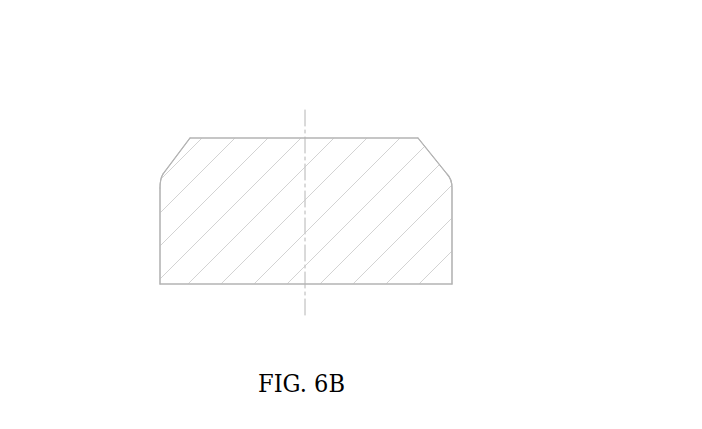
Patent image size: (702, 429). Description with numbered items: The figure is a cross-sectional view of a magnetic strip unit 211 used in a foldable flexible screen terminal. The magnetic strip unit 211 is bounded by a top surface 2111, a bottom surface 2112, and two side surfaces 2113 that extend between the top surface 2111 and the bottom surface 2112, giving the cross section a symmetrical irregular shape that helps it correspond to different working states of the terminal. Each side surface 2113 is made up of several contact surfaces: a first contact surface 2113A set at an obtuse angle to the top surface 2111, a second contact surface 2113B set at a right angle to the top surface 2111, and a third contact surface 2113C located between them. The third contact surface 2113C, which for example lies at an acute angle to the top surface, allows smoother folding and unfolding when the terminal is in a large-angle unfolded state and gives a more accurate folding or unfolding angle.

The magnetic strip unit 211 is at (372, 147).
The top surface 2111 is at (290, 138).
The bottom surface 2112 is at (277, 285).
The side surface 2113 is at (432, 153).
The first contact surface 2113A is at (182, 147).
The second contact surface 2113B is at (159, 243).
The third contact surface 2113C is at (161, 190).